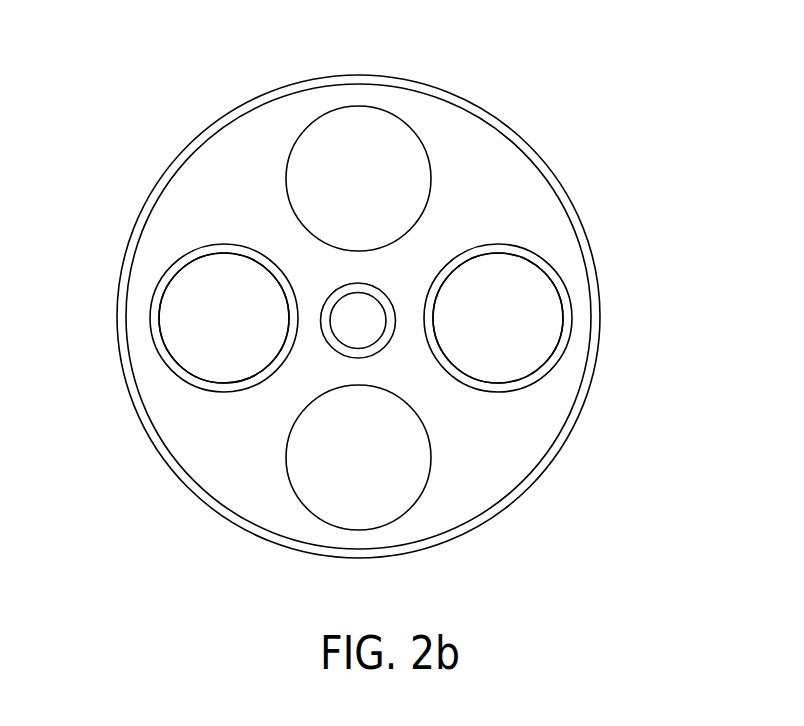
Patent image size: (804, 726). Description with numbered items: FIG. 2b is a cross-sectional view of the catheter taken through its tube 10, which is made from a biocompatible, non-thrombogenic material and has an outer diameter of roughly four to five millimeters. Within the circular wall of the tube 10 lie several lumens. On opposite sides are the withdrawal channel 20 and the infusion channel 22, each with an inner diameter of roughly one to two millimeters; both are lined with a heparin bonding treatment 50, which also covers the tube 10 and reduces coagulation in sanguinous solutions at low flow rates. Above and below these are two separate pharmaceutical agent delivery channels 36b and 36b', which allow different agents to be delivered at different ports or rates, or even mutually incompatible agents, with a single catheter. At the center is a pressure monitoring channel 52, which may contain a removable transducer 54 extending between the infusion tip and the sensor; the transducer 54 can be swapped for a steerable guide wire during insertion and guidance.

The tube 10 is at (513, 131).
The pharmaceutical agent delivery channel 36b is at (365, 143).
The pharmaceutical agent delivery channel 36b' is at (363, 498).
The withdrawal channel 20 is at (163, 278).
The infusion channel 22 is at (557, 367).
The heparin bonding treatment 50 is at (172, 350).
The pressure monitoring channel 52 is at (385, 347).
The removable transducer 54 is at (367, 302).